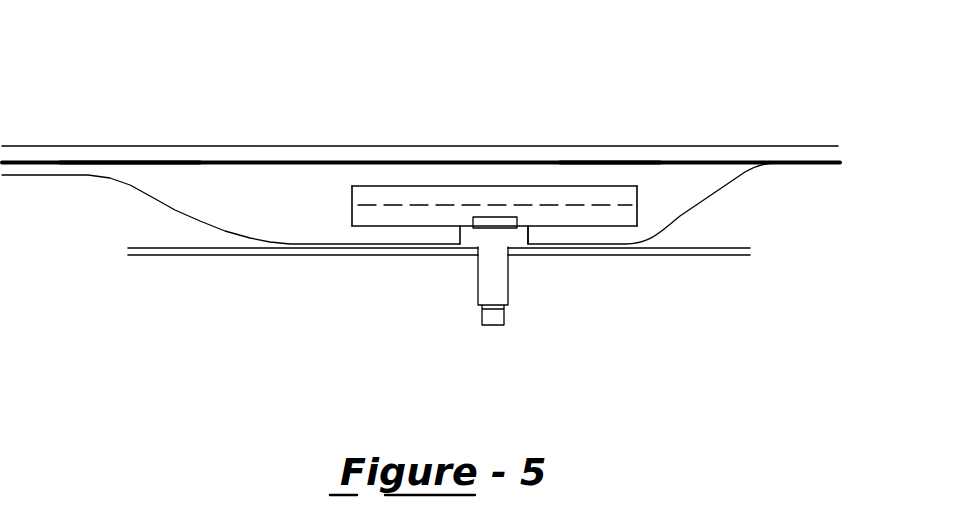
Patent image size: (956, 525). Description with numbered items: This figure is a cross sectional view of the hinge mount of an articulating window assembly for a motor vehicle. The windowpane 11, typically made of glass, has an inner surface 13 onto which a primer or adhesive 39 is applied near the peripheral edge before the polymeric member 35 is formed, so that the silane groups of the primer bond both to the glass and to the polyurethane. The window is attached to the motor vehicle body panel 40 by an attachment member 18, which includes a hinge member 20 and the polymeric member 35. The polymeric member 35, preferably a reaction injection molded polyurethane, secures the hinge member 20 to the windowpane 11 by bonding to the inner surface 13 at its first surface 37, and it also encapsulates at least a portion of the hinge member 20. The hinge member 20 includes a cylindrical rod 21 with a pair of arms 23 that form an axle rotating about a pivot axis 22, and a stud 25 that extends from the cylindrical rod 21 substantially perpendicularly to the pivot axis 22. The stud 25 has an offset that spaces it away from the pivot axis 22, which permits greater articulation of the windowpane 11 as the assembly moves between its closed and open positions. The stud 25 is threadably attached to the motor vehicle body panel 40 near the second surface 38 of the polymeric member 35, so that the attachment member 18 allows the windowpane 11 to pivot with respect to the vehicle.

The windowpane 11 is at (192, 158).
The inner surface 13 is at (804, 161).
The primer or adhesive 39 is at (126, 161).
The first surface 37 is at (592, 163).
The attachment member 18 is at (322, 210).
The polymeric member 35 is at (676, 212).
The cylindrical rod 21 is at (410, 190).
The arms 23 is at (366, 193).
The pivot axis 22 is at (486, 193).
The second surface 38 is at (398, 248).
The stud 25 is at (500, 277).
The motor vehicle body panel 40 is at (209, 266).
The hinge member 20 is at (651, 270).